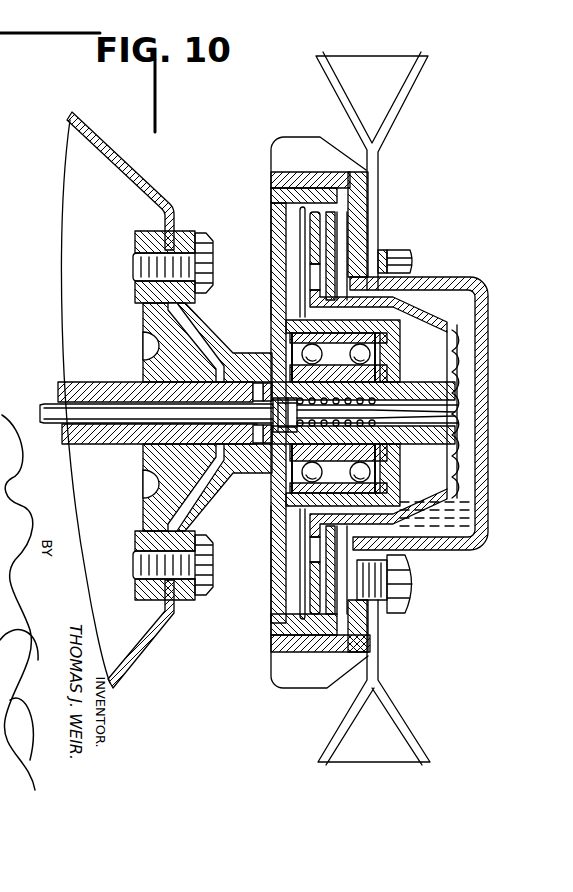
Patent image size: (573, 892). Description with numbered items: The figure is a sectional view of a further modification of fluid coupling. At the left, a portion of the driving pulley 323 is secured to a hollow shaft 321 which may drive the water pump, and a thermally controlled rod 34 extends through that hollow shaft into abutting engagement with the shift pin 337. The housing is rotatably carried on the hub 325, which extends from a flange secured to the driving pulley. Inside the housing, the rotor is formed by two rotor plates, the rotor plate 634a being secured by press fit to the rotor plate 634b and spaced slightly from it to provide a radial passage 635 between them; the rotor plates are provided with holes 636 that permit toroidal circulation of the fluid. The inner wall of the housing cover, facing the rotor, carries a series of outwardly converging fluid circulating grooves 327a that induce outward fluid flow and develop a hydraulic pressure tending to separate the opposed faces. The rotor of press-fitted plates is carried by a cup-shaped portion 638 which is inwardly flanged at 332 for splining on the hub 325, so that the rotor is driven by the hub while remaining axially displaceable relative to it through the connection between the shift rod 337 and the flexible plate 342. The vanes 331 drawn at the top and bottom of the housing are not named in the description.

The driving pulley portion 323 is at (134, 168).
The fan vane 331 is at (392, 97).
The radial passage 635 is at (320, 210).
The rotor plate 634a is at (332, 237).
The rotor plate 634b is at (310, 242).
The fluid circulating grooves 327a is at (370, 240).
The holes 636 is at (332, 273).
The cup-shaped portion 638 is at (420, 317).
The hollow shaft 321 is at (92, 390).
The thermally controlled rod 34 is at (102, 418).
The inward flange 332 is at (422, 380).
The hub 325 is at (463, 388).
The shift pin 337 is at (430, 413).
The flexible plate 342 is at (470, 447).